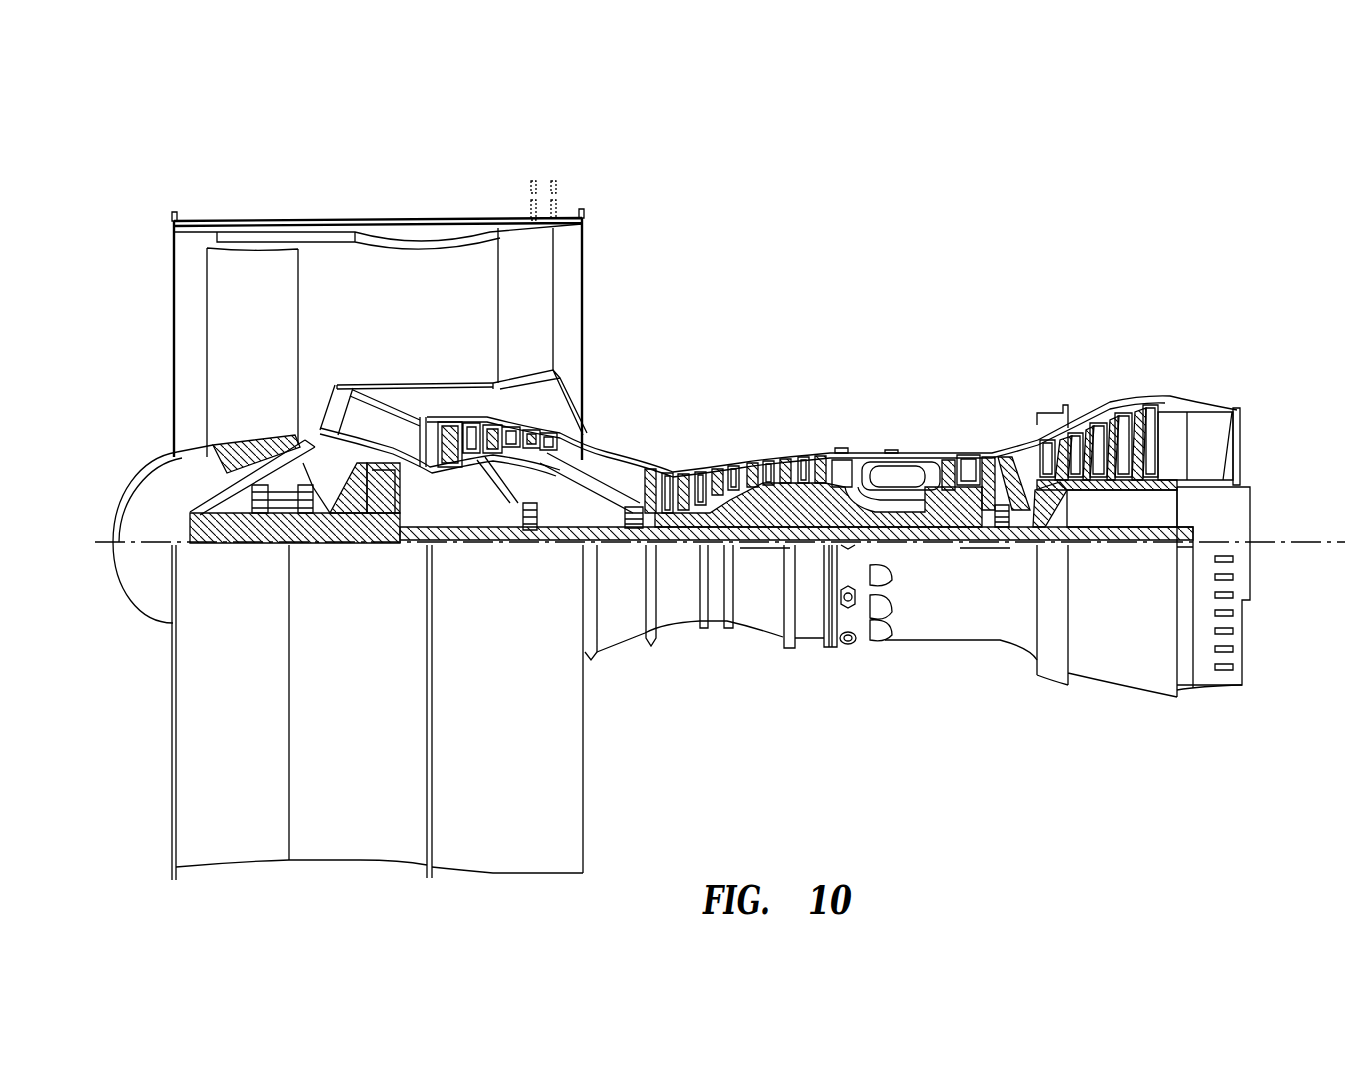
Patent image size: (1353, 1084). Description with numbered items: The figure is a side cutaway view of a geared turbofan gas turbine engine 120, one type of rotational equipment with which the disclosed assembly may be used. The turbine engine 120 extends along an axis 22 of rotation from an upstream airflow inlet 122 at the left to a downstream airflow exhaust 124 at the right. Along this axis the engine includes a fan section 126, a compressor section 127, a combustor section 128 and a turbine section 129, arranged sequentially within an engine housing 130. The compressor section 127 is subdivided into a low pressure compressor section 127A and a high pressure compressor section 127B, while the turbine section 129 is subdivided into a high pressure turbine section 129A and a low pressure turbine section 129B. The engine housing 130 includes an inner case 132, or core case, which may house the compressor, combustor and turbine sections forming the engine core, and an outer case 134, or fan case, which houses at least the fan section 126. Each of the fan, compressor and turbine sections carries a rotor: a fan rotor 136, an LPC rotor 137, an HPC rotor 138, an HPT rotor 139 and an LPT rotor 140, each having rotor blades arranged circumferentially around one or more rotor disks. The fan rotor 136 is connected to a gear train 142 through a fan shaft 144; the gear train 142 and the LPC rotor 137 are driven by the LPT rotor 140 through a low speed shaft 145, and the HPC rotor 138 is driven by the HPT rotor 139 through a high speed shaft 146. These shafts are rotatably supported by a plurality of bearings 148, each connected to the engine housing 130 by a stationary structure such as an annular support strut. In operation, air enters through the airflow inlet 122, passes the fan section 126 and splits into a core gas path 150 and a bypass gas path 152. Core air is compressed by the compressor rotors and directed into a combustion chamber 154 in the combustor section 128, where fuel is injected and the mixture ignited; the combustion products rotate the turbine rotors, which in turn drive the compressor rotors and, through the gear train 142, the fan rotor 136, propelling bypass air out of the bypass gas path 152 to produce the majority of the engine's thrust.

The axis 22 is at (1345, 540).
The turbine engine 120 is at (143, 200).
The airflow inlet 122 is at (174, 290).
The airflow exhaust 124 is at (1240, 440).
The fan section 126 is at (343, 193).
The compressor section 127 is at (810, 130).
The low pressure compressor section 127A is at (585, 176).
The high pressure compressor section 127B is at (810, 373).
The combustor section 128 is at (933, 373).
The turbine section 129 is at (1200, 303).
The high pressure turbine section 129A is at (1017, 373).
The low pressure turbine section 129B is at (1200, 373).
The engine housing 130 is at (606, 657).
The inner case 132 is at (808, 648).
The outer case 134 is at (535, 878).
The fan rotor 136 is at (177, 452).
The LPC rotor 137 is at (490, 546).
The HPC rotor 138 is at (765, 548).
The HPT rotor 139 is at (985, 548).
The LPT rotor 140 is at (1113, 503).
The gear train 142 is at (378, 548).
The fan shaft 144 is at (242, 548).
The low speed shaft 145 is at (1118, 548).
The high speed shaft 146 is at (900, 548).
The bearings 148 is at (265, 545).
The core gas path 150 is at (605, 465).
The bypass gas path 152 is at (440, 313).
The combustion chamber 154 is at (890, 470).